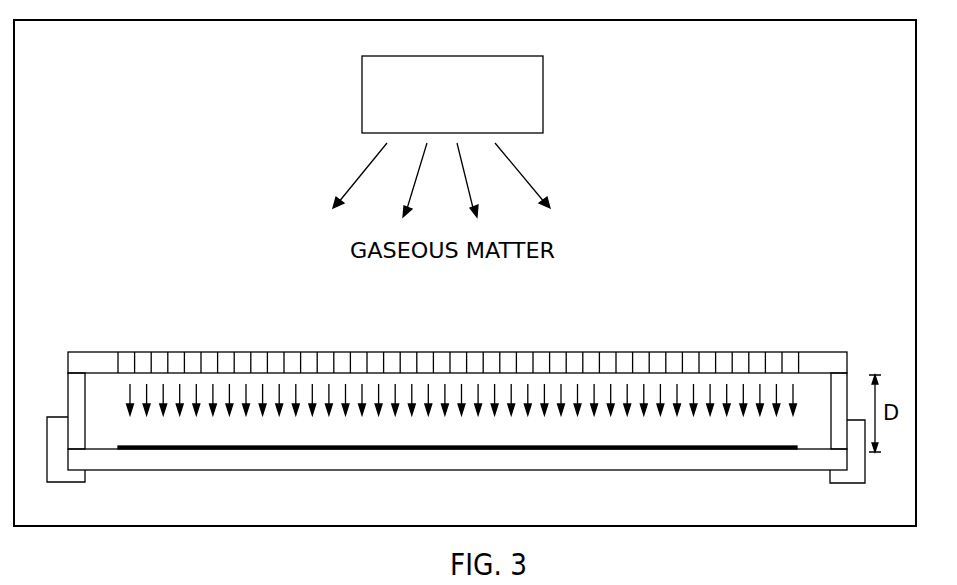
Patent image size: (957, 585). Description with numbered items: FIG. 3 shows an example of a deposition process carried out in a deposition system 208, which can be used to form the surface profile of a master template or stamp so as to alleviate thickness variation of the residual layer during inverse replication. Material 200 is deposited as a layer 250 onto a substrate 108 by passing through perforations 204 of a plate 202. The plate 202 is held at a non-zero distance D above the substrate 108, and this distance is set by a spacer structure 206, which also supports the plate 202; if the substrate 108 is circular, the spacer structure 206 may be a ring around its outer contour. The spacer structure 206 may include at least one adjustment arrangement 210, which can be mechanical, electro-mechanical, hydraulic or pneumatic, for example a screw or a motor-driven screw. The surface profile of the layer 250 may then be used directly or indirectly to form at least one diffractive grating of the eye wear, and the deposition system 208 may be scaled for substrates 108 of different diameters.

The deposition system 208 is at (88, 73).
The material 200 is at (403, 89).
The perforations 204 is at (462, 338).
The plate 202 is at (89, 352).
The spacer structure 206 is at (66, 393).
The substrate 108 is at (170, 470).
The layer 250 is at (145, 445).
The adjustment arrangement 210 is at (48, 417).